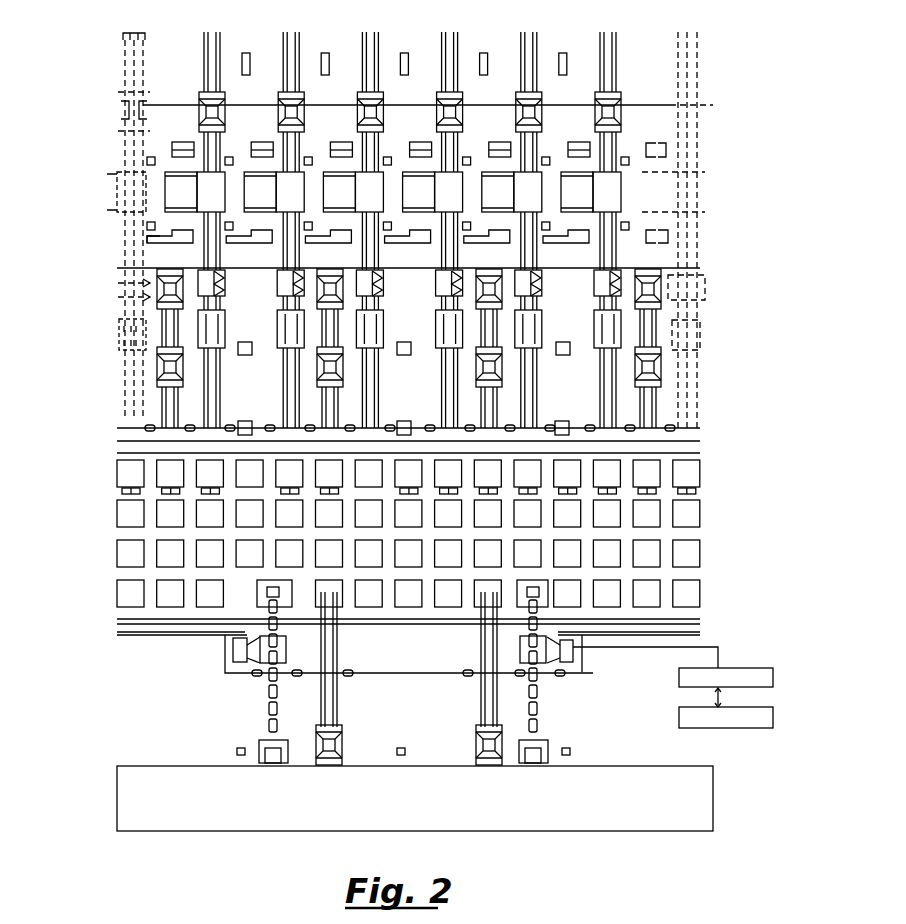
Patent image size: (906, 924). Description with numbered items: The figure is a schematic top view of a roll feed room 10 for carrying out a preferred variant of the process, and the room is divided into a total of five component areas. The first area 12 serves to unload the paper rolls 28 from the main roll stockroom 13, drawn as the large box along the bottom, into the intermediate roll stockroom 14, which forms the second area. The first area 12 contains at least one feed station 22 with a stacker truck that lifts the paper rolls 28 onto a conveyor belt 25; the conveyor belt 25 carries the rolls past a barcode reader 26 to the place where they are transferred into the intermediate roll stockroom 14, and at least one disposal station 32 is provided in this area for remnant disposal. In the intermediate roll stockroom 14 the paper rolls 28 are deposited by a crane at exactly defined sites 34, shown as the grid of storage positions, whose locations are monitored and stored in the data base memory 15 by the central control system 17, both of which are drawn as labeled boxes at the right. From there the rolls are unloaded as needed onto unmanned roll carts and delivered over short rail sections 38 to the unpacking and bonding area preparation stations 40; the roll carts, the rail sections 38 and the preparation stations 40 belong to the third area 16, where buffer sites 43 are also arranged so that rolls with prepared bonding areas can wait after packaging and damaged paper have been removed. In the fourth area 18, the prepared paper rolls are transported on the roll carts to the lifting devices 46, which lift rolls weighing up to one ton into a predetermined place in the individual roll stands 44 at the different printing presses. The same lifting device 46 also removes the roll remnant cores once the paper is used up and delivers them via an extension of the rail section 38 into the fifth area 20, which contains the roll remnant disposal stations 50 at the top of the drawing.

The roll feed room 10 is at (733, 220).
The first area 12 is at (163, 712).
The main roll stockroom 13 is at (690, 802).
The intermediate roll stockroom 14 is at (107, 516).
The data base memory 15 is at (750, 728).
The third area 16 is at (117, 344).
The central control system 17 is at (763, 668).
The fourth area 18 is at (113, 198).
The fifth area 20 is at (117, 55).
The feed station 22 is at (578, 764).
The conveyor belt 25 is at (538, 690).
The barcode reader 26 is at (550, 662).
The paper rolls 28 is at (678, 516).
The disposal station 32 is at (656, 364).
The exactly defined sites 34 is at (695, 591).
The rail sections 38 is at (730, 392).
The unpacking and bonding area preparation stations 40 is at (618, 322).
The buffer sites 43 is at (618, 262).
The roll stands 44 is at (598, 172).
The lifting devices 46 is at (607, 190).
The roll remnant disposal stations 50 is at (621, 98).